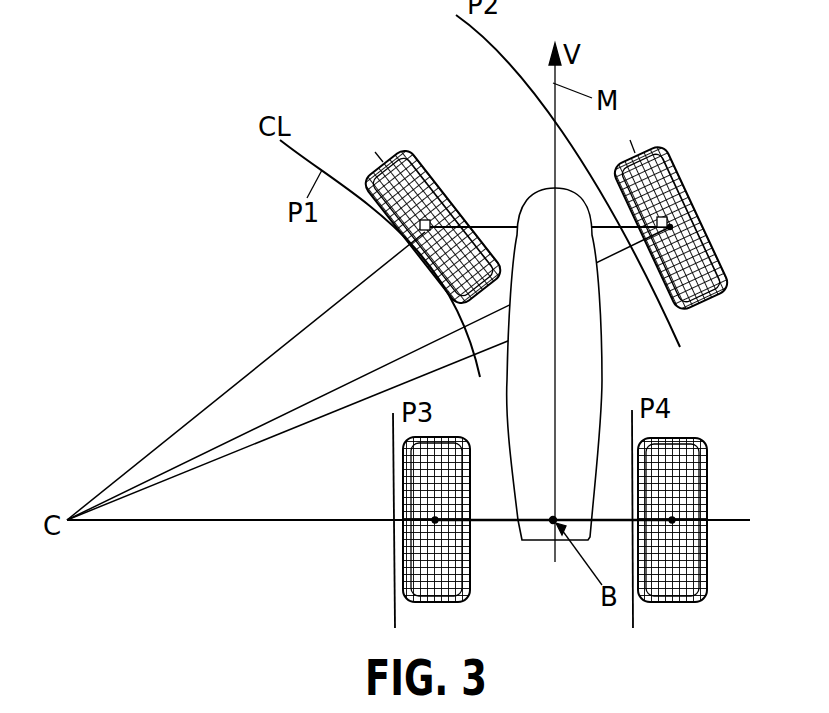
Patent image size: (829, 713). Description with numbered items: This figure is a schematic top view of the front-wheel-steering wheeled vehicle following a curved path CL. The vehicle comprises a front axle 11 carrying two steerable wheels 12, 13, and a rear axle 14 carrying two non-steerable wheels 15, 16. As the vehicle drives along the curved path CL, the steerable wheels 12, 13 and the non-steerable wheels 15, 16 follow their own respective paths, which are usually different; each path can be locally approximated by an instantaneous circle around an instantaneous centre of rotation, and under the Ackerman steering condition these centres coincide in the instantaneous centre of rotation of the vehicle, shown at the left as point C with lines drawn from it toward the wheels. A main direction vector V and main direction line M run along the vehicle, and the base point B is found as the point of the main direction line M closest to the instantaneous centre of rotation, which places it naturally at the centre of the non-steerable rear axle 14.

The front axle 11 is at (497, 225).
The steerable wheel 12 is at (410, 152).
The steerable wheel 13 is at (680, 167).
The rear axle 14 is at (488, 523).
The non-steerable wheel 15 is at (463, 598).
The non-steerable wheel 16 is at (708, 480).